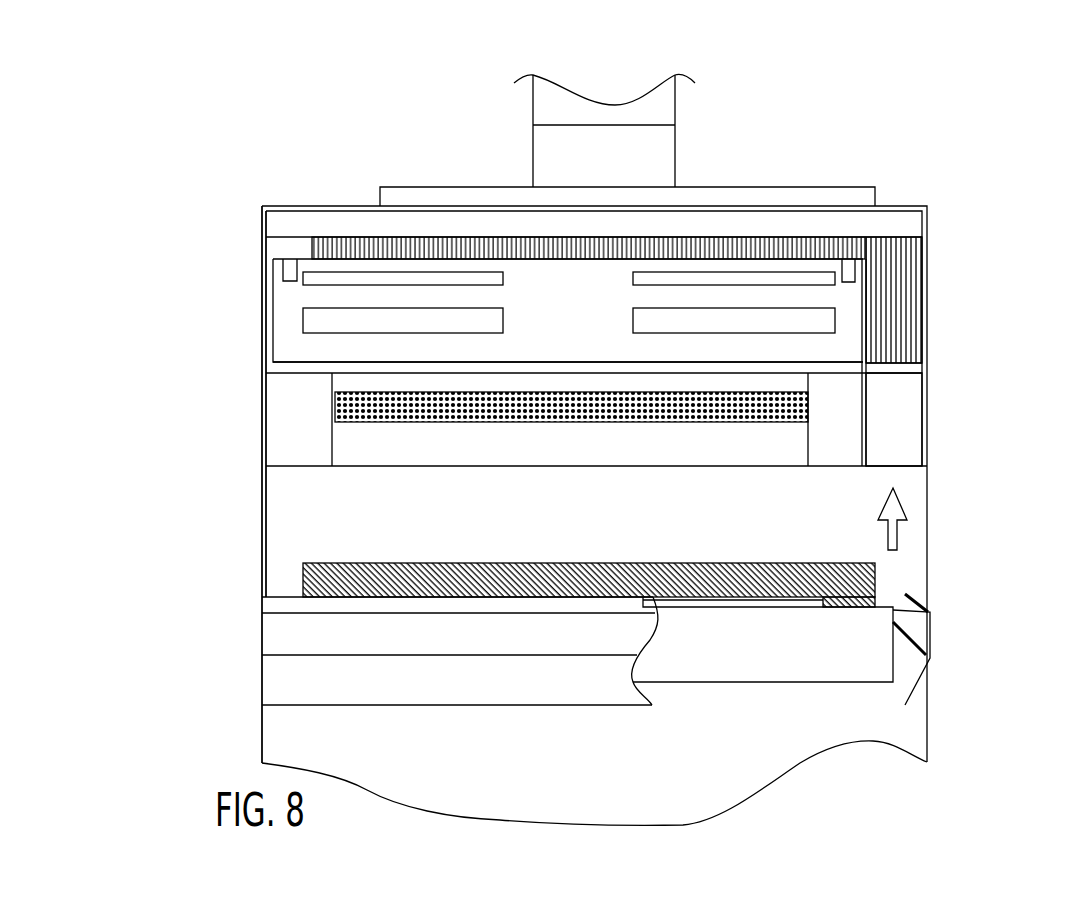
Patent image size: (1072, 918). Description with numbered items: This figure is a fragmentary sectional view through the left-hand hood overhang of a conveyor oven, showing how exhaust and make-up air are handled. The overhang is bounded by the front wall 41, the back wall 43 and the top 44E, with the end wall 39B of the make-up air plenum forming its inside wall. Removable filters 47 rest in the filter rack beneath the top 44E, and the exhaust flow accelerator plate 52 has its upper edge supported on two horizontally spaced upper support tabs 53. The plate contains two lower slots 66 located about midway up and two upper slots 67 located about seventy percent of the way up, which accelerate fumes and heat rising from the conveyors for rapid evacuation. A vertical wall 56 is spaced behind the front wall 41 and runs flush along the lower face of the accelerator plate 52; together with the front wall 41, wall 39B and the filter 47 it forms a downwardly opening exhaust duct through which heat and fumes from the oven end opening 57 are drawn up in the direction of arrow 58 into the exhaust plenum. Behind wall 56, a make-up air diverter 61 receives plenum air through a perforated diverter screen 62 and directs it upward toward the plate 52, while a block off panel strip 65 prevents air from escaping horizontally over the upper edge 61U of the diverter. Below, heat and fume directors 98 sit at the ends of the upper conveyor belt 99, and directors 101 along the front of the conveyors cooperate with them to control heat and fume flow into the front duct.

The end wall of the make-up air plenum 39B is at (892, 415).
The front wall 41 is at (927, 248).
The back wall 43 is at (262, 297).
The top 44E is at (320, 206).
The filters 47 is at (895, 257).
The exhaust flow accelerator plate 52 is at (583, 302).
The upper support tabs 53 is at (292, 270).
The vertical wall 56 is at (867, 372).
The oven end opening 57 is at (400, 578).
The arrow 58 is at (902, 487).
The make-up air diverter 61 is at (567, 447).
The upper edge of diverter 61U is at (653, 425).
The diverter screen 62 is at (495, 415).
The block off panel strip 65 is at (733, 367).
The lower slots 66 is at (727, 322).
The upper slots 67 is at (413, 278).
The heat and fume director 98 is at (509, 645).
The upper conveyor belt 99 is at (758, 605).
The directors 101 is at (932, 637).